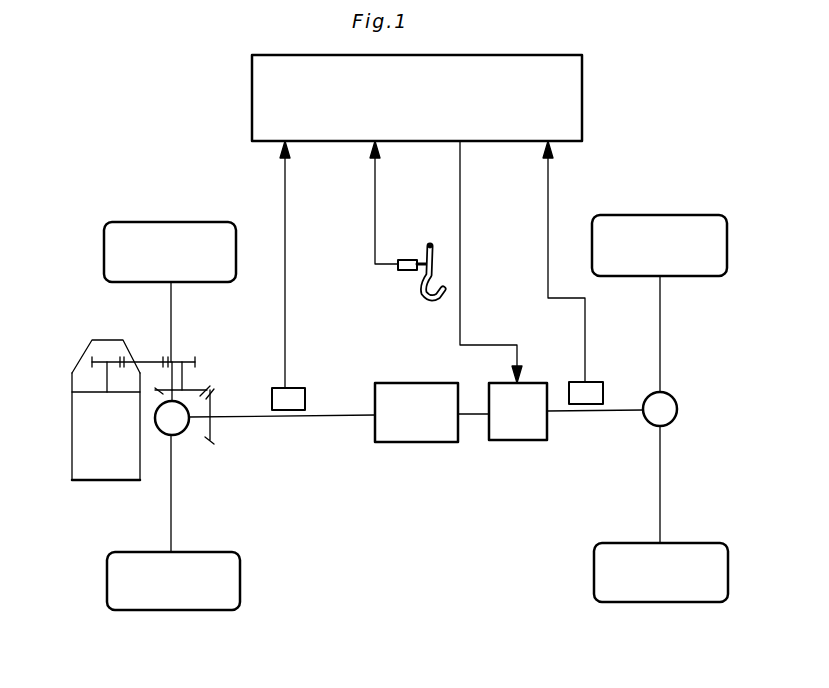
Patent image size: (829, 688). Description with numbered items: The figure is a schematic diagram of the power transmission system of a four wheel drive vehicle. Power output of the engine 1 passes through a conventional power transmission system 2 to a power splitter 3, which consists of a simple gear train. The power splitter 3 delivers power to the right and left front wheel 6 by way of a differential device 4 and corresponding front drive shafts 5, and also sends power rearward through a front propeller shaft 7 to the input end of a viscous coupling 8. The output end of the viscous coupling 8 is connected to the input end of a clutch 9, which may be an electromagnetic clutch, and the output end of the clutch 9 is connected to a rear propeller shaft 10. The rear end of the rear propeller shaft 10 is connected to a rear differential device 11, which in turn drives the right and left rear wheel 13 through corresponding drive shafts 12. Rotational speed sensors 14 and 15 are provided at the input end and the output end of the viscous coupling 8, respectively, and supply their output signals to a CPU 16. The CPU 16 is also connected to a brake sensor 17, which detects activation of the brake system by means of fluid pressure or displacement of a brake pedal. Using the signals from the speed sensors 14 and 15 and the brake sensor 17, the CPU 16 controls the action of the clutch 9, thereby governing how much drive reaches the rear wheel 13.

The engine 1 is at (72, 448).
The power transmission system 2 is at (97, 340).
The power splitter 3 is at (214, 375).
The differential device 4 is at (163, 432).
The front drive shafts 5 is at (172, 320).
The front wheel 6 is at (200, 222).
The front propeller shaft 7 is at (275, 417).
The viscous coupling 8 is at (375, 417).
The clutch 9 is at (527, 443).
The rear propeller shaft 10 is at (625, 413).
The rear differential device 11 is at (678, 403).
The drive shafts 12 is at (662, 348).
The rear wheel 13 is at (695, 215).
The rotational speed sensor 14 is at (300, 386).
The rotational speed sensor 15 is at (600, 380).
The CPU 16 is at (582, 80).
The brake sensor 17 is at (406, 260).